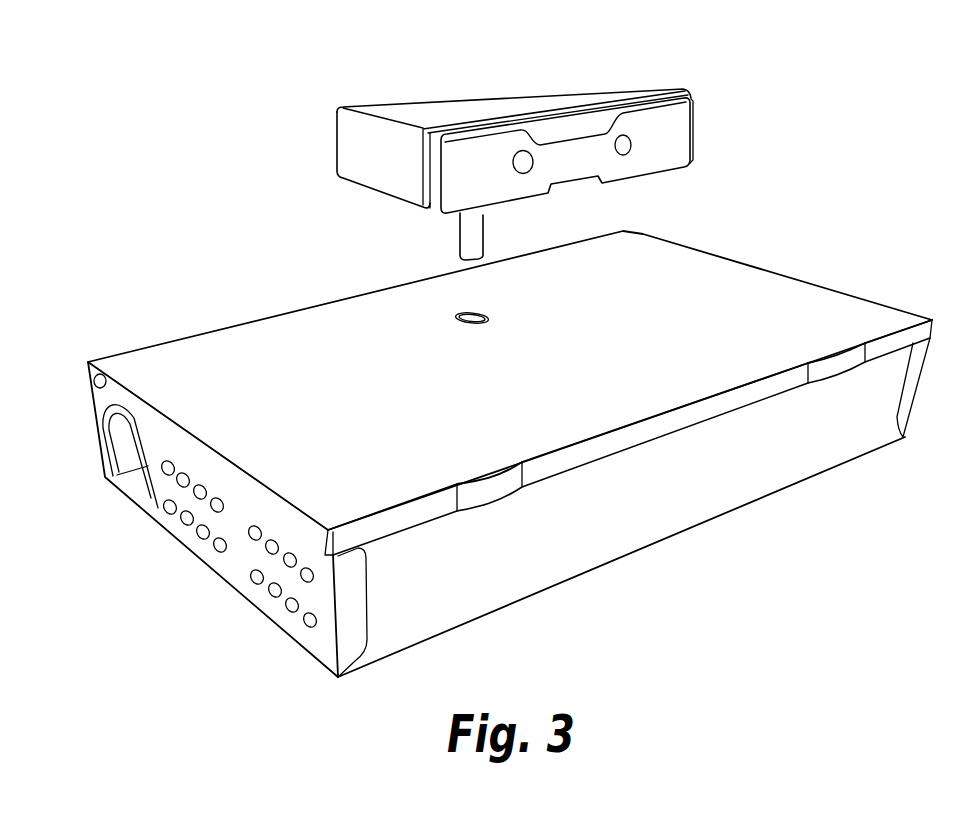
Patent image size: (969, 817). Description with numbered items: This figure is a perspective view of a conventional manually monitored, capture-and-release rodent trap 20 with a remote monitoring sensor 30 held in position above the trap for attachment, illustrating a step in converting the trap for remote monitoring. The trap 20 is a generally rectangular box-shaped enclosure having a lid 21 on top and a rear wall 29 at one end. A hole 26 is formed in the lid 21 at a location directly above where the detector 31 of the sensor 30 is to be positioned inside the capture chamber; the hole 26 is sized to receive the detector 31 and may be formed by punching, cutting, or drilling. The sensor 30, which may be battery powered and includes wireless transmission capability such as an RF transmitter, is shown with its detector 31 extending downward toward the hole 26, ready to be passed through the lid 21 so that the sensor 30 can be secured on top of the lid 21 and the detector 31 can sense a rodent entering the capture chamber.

The rodent trap 20 is at (716, 578).
The lid 21 is at (770, 313).
The hole 26 is at (483, 313).
The rear wall 29 is at (93, 417).
The remote monitoring sensor 30 is at (575, 93).
The detector 31 is at (457, 242).